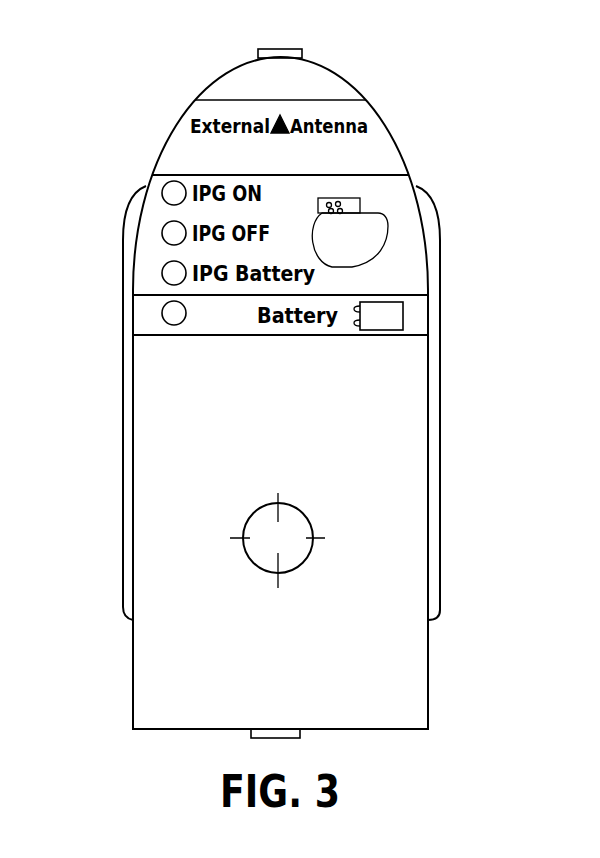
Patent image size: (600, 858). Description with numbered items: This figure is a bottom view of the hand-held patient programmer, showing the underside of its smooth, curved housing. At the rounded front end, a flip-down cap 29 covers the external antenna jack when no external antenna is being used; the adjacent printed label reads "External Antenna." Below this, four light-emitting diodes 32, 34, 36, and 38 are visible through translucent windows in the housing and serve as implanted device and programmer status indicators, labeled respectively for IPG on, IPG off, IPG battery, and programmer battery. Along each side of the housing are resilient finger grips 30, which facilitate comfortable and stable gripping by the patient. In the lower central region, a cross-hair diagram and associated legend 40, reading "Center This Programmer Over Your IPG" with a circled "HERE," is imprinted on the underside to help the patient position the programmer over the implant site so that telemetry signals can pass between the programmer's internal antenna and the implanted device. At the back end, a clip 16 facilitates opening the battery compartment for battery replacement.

The flip-down cap 29 is at (302, 51).
The light-emitting diode 32 is at (164, 190).
The light-emitting diode 34 is at (163, 234).
The light-emitting diode 36 is at (163, 274).
The light-emitting diode 38 is at (163, 314).
The cross-hair diagram and legend 40 is at (306, 428).
The resilient finger grips 30 is at (123, 488).
The clip 16 is at (300, 731).